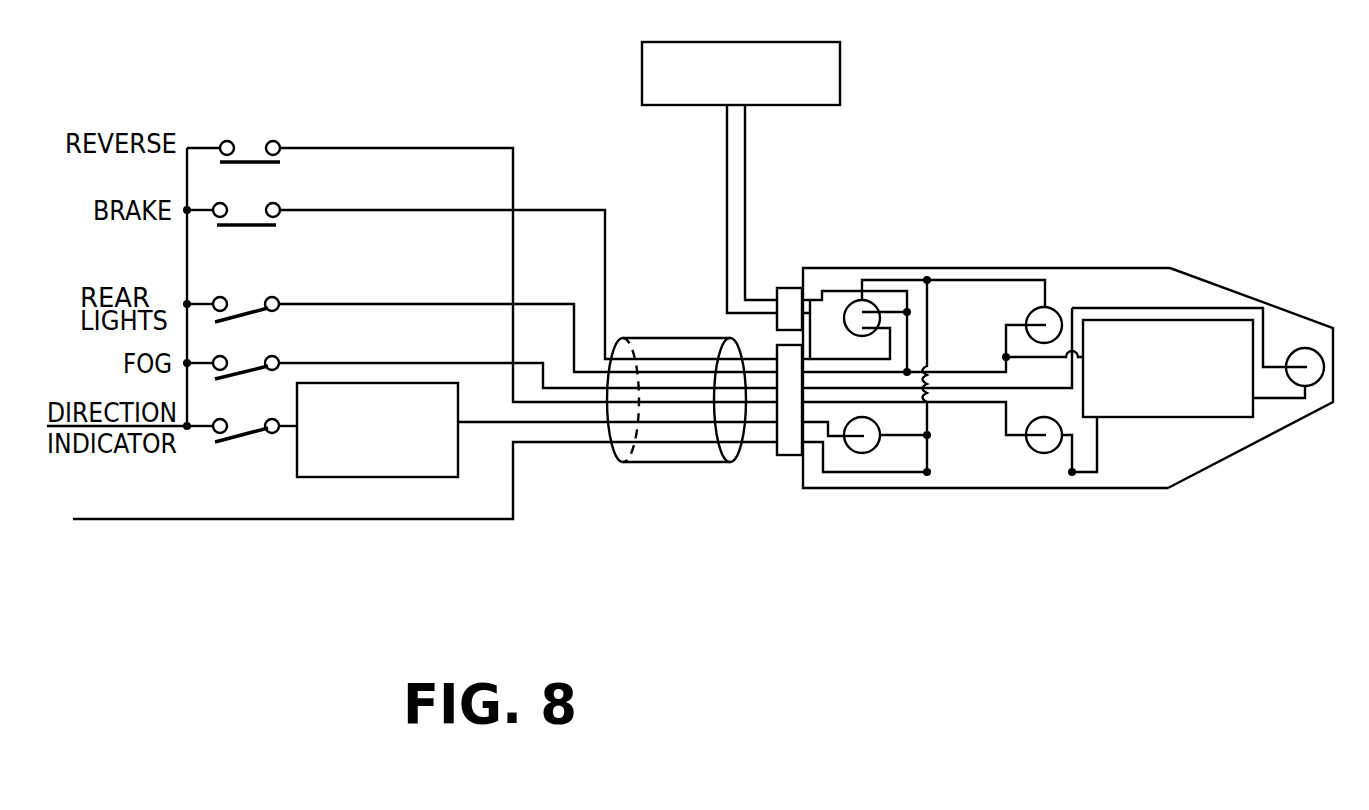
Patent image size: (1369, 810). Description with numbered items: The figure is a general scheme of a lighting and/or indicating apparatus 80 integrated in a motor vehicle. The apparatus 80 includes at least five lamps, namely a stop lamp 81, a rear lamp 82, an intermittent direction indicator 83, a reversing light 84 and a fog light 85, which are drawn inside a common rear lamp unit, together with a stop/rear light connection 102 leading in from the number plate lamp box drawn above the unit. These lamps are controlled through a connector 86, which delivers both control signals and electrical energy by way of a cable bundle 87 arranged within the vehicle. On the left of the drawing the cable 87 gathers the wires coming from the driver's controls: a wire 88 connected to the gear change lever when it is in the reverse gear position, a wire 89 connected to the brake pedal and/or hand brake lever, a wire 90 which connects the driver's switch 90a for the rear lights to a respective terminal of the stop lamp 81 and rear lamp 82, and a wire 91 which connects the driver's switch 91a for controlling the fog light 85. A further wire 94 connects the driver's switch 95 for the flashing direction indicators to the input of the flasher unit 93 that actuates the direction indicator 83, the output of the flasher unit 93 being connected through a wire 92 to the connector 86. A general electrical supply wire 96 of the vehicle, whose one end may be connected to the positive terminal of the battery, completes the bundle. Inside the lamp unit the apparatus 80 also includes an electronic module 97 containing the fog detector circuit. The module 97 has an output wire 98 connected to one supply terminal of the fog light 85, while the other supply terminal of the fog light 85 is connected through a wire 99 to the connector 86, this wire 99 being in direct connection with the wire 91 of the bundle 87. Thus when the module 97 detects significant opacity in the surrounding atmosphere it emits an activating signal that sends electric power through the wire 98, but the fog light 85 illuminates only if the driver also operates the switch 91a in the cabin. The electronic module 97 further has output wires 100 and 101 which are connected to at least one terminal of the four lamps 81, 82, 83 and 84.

The lighting and/or indicating apparatus 80 is at (1215, 467).
The stop lamp 81 is at (857, 302).
The rear lamp 82 is at (1048, 310).
The intermittent direction indicator 83 is at (883, 450).
The reversing light 84 is at (1045, 453).
The fog light 85 is at (1305, 348).
The connector 86 is at (787, 455).
The cable bundle 87 is at (652, 463).
The reverse gear wire 88 is at (447, 147).
The brake wire 89 is at (537, 209).
The rear lights wire 90 is at (528, 303).
The rear lights switch 90a is at (253, 303).
The fog light wire 91 is at (447, 362).
The fog light switch 91a is at (262, 363).
The flasher output wire 92 is at (480, 425).
The flasher unit 93 is at (435, 478).
The direction indicator switch wire 94 is at (287, 430).
The direction indicator switch 95 is at (230, 440).
The general electrical supply wire 96 is at (513, 483).
The electronic module 97 is at (1217, 407).
The electronic module output wire 98 is at (1287, 415).
The fog light connector wire 99 is at (1265, 315).
The electronic module output wire 100 is at (1097, 452).
The electronic module output wire 101 is at (1006, 340).
The stop/rear light wire 102 is at (790, 287).